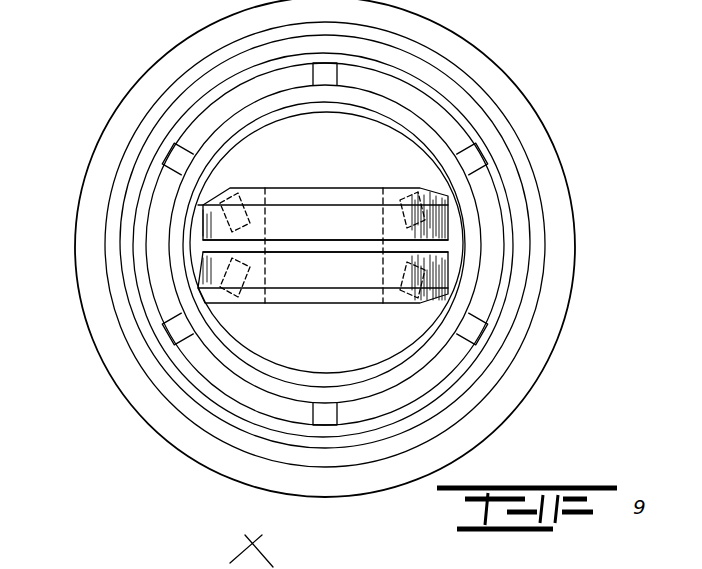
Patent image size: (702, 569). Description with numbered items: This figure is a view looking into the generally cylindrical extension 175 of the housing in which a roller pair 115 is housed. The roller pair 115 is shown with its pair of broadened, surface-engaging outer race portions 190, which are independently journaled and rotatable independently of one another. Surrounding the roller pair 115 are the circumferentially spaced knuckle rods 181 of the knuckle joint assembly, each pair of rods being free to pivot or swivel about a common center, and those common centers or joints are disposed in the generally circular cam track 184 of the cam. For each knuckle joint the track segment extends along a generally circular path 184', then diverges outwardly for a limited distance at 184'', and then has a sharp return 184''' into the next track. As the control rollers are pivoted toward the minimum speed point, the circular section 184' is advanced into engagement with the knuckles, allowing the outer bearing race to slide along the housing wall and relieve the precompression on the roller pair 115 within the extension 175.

The cylindrical extension 175 is at (550, 142).
The knuckle rod 181 is at (178, 154).
The cam track 184 is at (323, 244).
The circular path of cam track 184' is at (466, 436).
The outwardly diverging track segment 184'' is at (512, 404).
The sharp return of cam track 184''' is at (534, 380).
The outer race portion 190 is at (333, 280).
The roller pair 115 is at (304, 188).